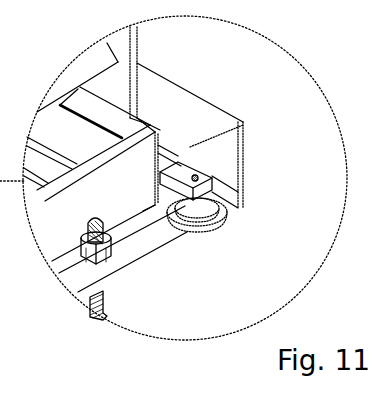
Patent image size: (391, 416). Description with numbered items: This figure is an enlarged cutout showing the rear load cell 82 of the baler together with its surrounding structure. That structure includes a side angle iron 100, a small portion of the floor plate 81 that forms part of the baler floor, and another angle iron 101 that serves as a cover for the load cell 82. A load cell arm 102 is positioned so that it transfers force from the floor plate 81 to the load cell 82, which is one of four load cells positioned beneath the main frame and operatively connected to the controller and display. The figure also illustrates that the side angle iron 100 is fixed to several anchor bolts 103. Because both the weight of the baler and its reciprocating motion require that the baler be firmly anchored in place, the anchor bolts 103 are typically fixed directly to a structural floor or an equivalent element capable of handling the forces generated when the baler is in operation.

The floor plate 81 is at (173, 138).
The load cell 82 is at (215, 223).
The side angle iron 100 is at (163, 233).
The angle iron 101 is at (193, 120).
The load cell arm 102 is at (183, 175).
The anchor bolt 103 is at (98, 312).